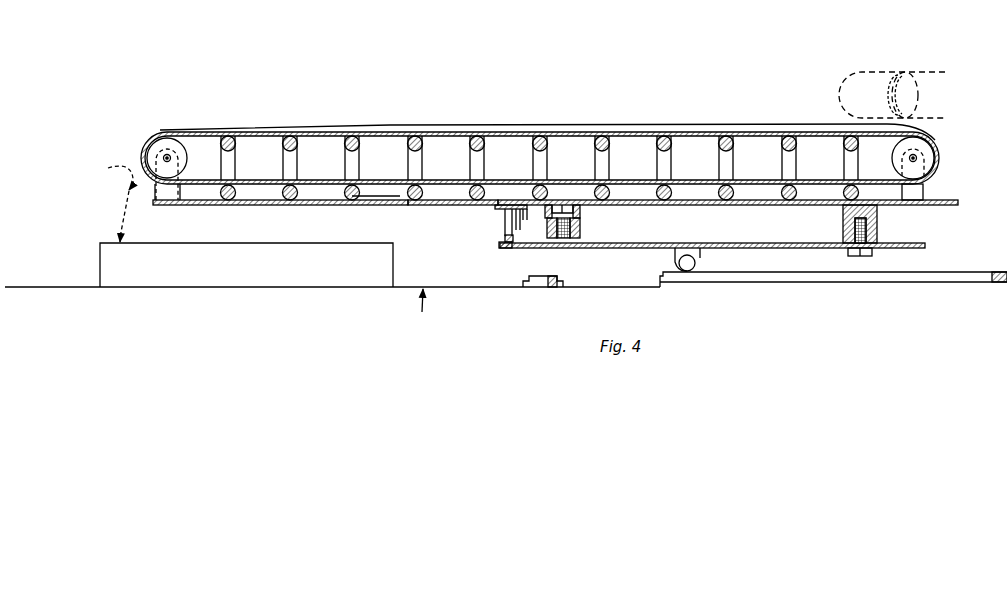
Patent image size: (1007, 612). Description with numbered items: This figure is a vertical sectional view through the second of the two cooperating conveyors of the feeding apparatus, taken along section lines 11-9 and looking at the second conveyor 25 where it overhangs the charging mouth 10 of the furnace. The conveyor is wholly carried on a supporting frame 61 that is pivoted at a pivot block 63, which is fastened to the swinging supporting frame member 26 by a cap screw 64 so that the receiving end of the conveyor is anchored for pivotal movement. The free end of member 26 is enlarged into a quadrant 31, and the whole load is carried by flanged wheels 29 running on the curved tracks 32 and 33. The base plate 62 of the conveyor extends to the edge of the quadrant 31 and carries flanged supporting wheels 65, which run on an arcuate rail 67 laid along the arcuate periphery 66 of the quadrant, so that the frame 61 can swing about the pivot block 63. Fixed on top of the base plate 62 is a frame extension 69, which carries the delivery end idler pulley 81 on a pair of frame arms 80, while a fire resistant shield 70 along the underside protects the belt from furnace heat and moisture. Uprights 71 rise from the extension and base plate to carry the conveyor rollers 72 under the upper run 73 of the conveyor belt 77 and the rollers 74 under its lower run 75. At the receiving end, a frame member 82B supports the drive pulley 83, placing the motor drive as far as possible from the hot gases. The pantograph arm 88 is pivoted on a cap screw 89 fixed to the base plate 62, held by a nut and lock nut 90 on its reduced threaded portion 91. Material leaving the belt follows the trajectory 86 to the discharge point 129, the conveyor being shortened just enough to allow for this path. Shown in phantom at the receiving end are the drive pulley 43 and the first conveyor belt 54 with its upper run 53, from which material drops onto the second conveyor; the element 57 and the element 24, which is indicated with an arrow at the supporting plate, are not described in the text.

The charging mouth 10 is at (152, 290).
The discharge point 129 is at (246, 265).
The section line reference 11-9 is at (422, 310).
The second conveyor 25 is at (630, 126).
The upper run 73 is at (568, 131).
The conveyor belt 77 is at (689, 124).
The idler pulley 81 is at (165, 150).
The frame arms 80 is at (166, 202).
The trajectory 86 is at (110, 199).
The drive pulley 83 is at (938, 158).
The frame member 82B is at (925, 192).
The uprights 71 is at (410, 173).
The conveyor rollers 72 is at (478, 146).
The rollers 74 is at (390, 197).
The lower run 75 is at (500, 182).
The fire resistant shield 70 is at (337, 206).
The frame extension 69 is at (448, 206).
The supporting frame 61 is at (960, 203).
The base plate 62 is at (496, 208).
The flanged supporting wheels 65 is at (505, 237).
The arcuate periphery 66 is at (499, 246).
The arcuate rail 67 is at (508, 249).
The supporting frame member 26 is at (760, 243).
The carriage 24 is at (927, 245).
The quadrant 31 is at (540, 249).
The pantograph arm 88 is at (582, 211).
The cap screw 89 is at (562, 205).
The nut and lock nut 90 is at (582, 228).
The reduced threaded portion 91 is at (572, 240).
The curved track 33 is at (545, 288).
The pivot block 63 is at (878, 226).
The cap screw 64 is at (872, 253).
The flanged wheels 29 is at (688, 272).
The curved track 32 is at (985, 284).
The upper run 53 is at (945, 75).
The first conveyor belt 54 is at (937, 70).
The drive pulley 43 is at (908, 72).
The roll end 57 is at (946, 116).